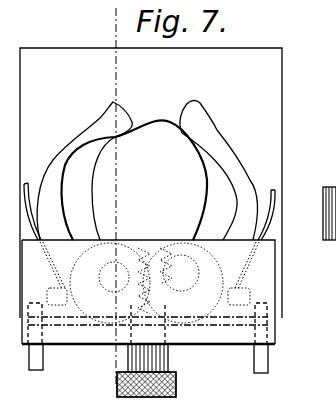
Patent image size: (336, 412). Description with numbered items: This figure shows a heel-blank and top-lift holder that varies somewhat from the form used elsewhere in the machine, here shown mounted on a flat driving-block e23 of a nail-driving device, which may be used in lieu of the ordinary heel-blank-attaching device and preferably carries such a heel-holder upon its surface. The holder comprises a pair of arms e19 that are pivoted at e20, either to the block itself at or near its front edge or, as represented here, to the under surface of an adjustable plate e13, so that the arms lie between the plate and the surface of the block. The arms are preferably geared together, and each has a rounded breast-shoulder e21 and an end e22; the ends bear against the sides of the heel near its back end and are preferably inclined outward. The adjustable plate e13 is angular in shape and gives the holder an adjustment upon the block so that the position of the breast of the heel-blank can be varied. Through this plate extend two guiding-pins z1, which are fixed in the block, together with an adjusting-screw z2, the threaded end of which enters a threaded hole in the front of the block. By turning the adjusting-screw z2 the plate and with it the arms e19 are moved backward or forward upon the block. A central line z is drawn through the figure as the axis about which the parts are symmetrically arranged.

The adjustable plate e13 is at (200, 329).
The arms e19 is at (149, 235).
The pivot e20 is at (149, 283).
The rounded breast-shoulders e21 is at (164, 186).
The end e22 is at (115, 137).
The flat driving-block e23 is at (150, 170).
The axis z is at (110, 199).
The guiding-pins z1 is at (41, 363).
The adjusting-screw z2 is at (160, 370).